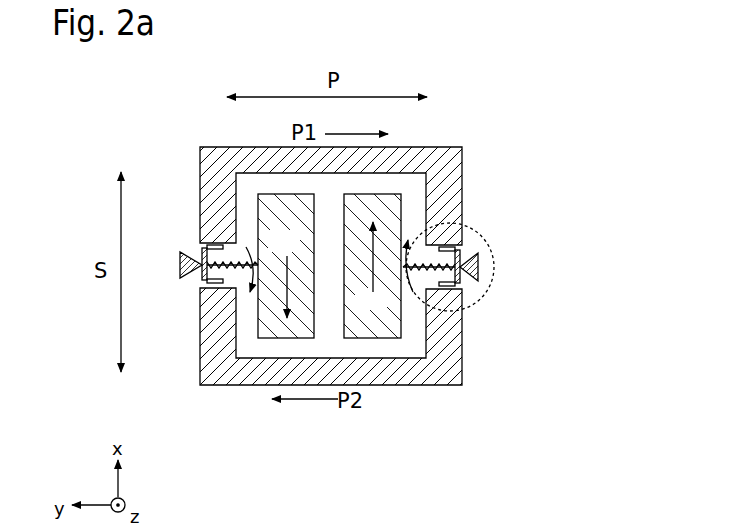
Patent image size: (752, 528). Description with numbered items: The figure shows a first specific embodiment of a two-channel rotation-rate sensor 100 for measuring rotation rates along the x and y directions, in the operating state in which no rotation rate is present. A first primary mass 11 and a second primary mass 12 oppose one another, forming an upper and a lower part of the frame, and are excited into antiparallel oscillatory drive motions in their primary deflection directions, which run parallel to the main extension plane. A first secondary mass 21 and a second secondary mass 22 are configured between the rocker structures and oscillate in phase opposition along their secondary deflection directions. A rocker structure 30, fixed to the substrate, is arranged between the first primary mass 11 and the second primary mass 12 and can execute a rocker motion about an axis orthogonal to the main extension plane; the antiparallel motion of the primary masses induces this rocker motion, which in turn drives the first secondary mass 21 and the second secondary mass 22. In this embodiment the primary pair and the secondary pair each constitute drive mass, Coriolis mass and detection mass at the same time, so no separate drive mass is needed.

The rotation-rate sensor 100 is at (530, 99).
The first primary mass 11 is at (200, 173).
The second primary mass 12 is at (200, 341).
The first secondary mass 21 is at (259, 209).
The second secondary mass 22 is at (402, 209).
The rocker structure 30 is at (493, 250).